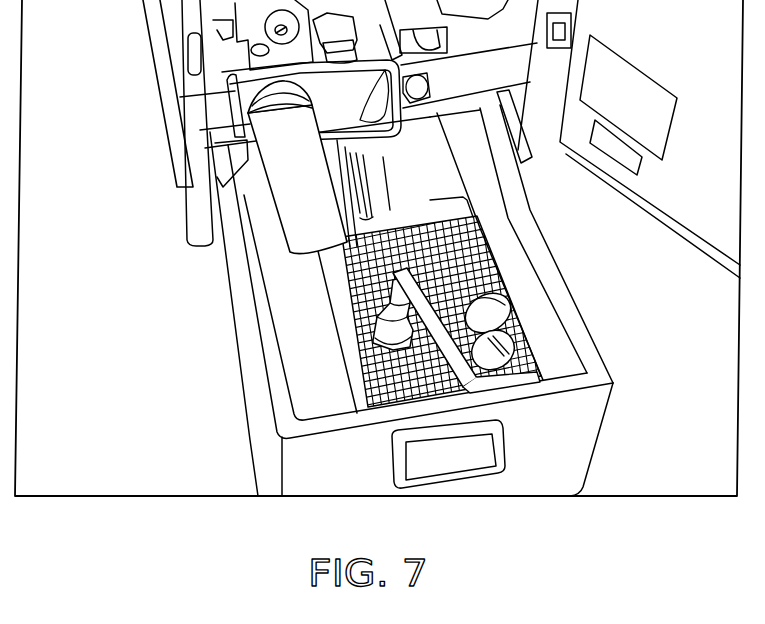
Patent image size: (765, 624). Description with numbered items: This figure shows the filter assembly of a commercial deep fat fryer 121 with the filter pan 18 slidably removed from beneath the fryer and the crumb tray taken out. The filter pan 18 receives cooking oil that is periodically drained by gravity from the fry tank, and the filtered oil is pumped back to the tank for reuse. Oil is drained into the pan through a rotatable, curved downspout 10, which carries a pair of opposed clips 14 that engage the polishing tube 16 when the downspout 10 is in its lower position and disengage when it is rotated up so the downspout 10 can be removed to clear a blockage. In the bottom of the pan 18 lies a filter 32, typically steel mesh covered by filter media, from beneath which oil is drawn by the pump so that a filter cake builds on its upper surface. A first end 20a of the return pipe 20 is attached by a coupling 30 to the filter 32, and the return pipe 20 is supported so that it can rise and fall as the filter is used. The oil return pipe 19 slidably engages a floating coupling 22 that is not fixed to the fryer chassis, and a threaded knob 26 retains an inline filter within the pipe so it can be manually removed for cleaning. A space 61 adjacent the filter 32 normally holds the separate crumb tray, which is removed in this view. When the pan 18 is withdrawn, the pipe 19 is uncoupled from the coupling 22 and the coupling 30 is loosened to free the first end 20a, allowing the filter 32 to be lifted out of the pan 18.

The downspout 10 is at (292, 208).
The clips 14 is at (366, 156).
The polishing tube 16 is at (367, 207).
The filter pan 18 is at (574, 286).
The oil return pipe 19 is at (480, 290).
The return pipe 20 is at (446, 345).
The first end of return pipe 20a is at (380, 303).
The coupling 22 is at (430, 97).
The threaded knob 26 is at (513, 353).
The coupling 30 is at (378, 338).
The filter 32 is at (457, 237).
The space 61 is at (304, 296).
The commercial deep fat fryer 121 is at (150, 44).